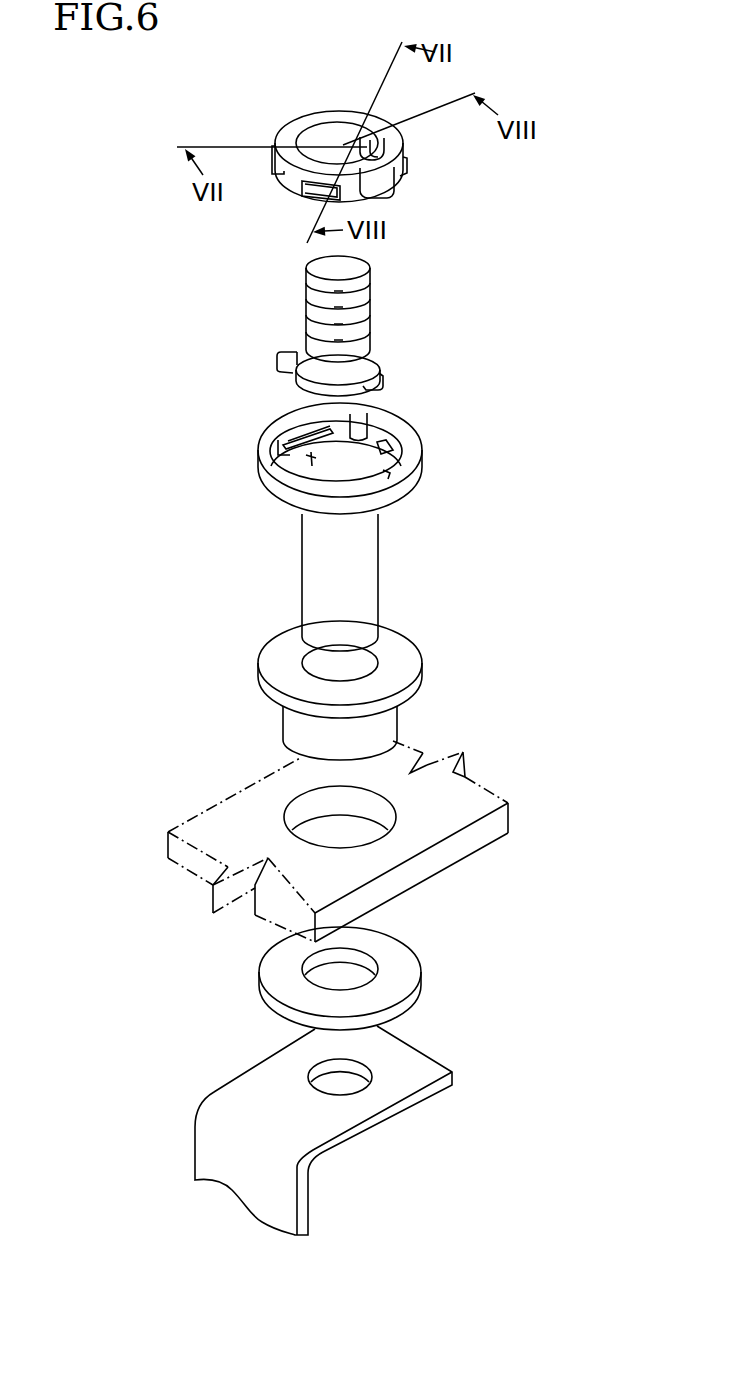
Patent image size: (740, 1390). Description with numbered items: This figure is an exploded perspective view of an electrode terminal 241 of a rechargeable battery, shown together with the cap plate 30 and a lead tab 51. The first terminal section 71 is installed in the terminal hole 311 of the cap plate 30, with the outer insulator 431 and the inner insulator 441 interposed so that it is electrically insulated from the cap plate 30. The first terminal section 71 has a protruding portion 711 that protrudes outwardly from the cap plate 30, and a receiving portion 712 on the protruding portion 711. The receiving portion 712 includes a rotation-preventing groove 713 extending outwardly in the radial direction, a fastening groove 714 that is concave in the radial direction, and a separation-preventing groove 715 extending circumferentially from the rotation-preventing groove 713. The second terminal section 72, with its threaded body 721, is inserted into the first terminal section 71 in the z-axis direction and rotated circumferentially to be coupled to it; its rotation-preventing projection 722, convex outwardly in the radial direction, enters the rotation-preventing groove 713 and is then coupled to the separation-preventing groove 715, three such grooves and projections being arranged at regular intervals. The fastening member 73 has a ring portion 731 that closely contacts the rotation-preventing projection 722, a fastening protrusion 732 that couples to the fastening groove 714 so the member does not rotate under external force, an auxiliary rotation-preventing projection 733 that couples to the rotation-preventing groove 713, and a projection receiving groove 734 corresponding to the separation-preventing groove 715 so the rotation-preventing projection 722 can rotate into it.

The electrode terminal 241 is at (600, 284).
The fastening member 73 is at (275, 113).
The ring portion 731 is at (327, 115).
The fastening protrusion 732 is at (308, 190).
The auxiliary rotation-preventing projection 733 is at (387, 190).
The projection receiving groove 734 is at (402, 158).
The second terminal section 72 is at (290, 306).
The threaded shaft 721 is at (370, 292).
The rotation-preventing projection 722 is at (280, 358).
The first terminal section 71 is at (400, 603).
The protruding portion 711 is at (393, 495).
The receiving portion 712 is at (313, 463).
The rotation-preventing groove 713 is at (362, 422).
The fastening groove 714 is at (298, 433).
The separation-preventing groove 715 is at (387, 457).
The outer insulator 431 is at (387, 730).
The cap plate 30 is at (493, 825).
The terminal hole 311 is at (308, 805).
The inner insulator 441 is at (407, 982).
The bracket 51 is at (427, 1072).